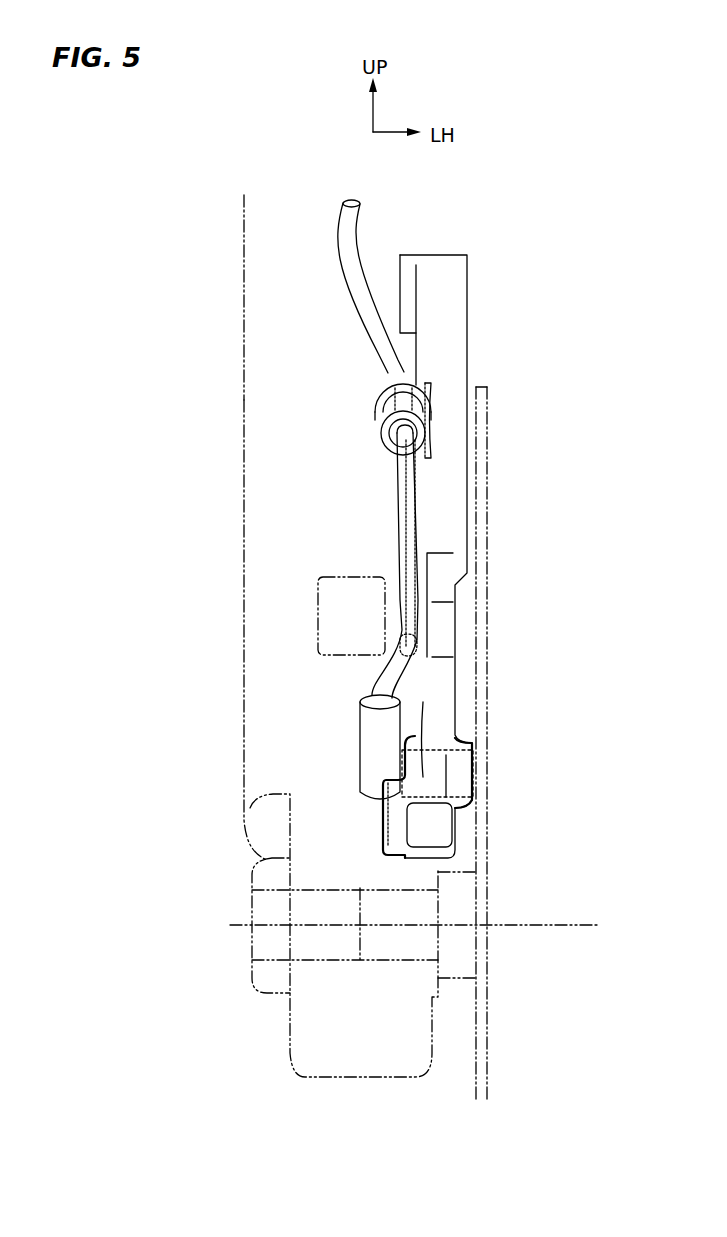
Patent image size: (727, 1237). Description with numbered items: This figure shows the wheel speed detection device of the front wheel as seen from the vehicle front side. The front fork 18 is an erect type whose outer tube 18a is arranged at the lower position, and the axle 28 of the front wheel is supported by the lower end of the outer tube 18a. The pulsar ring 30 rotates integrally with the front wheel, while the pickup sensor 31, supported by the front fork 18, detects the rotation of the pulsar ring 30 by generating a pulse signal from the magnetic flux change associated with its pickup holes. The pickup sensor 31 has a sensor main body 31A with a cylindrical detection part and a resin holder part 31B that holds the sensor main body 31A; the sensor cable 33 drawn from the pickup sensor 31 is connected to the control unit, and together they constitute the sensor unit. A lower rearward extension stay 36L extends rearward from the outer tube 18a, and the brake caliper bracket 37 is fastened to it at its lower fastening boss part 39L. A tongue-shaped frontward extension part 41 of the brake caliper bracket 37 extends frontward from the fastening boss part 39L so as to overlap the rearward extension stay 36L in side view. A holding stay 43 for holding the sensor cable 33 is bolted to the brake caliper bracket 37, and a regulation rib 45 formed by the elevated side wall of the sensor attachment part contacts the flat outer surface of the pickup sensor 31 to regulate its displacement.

The front fork 18 is at (234, 535).
The outer tube 18a is at (244, 397).
The axle 28 is at (462, 968).
The pulsar ring 30 is at (497, 411).
The pickup sensor 31 is at (473, 742).
The sensor main body 31A is at (465, 803).
The holder part 31B is at (386, 773).
The sensor cable 33 is at (402, 532).
The rearward extension stay 36L is at (320, 622).
The brake caliper bracket 37 is at (478, 324).
The fastening boss part 39L is at (413, 645).
The frontward extension part 41 is at (444, 597).
The holding stay 43 is at (385, 422).
The regulation rib 45 is at (390, 818).